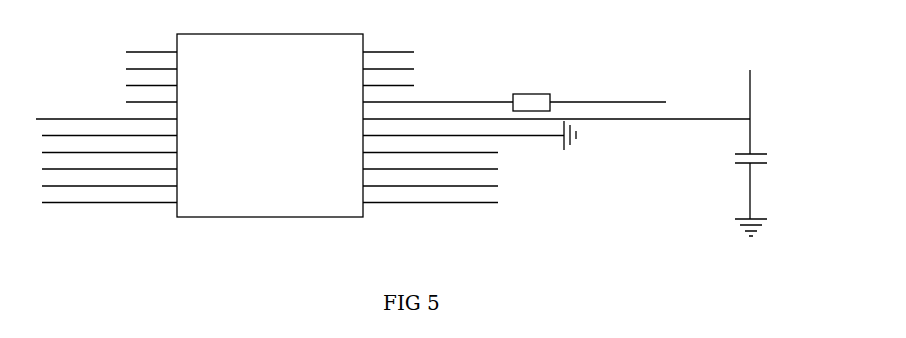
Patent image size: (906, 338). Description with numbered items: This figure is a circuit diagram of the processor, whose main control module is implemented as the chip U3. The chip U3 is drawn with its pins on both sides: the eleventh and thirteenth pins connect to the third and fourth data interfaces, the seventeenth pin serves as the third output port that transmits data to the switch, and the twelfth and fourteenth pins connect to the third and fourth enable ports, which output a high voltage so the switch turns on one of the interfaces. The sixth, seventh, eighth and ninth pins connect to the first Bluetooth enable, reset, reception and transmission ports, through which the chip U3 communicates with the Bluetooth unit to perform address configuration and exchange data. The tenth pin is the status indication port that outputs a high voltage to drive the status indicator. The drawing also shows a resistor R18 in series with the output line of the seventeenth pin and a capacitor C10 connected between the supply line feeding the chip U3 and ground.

The chip U3 is at (402, 116).
The resistor R18 is at (531, 91).
The capacitor C10 is at (734, 153).